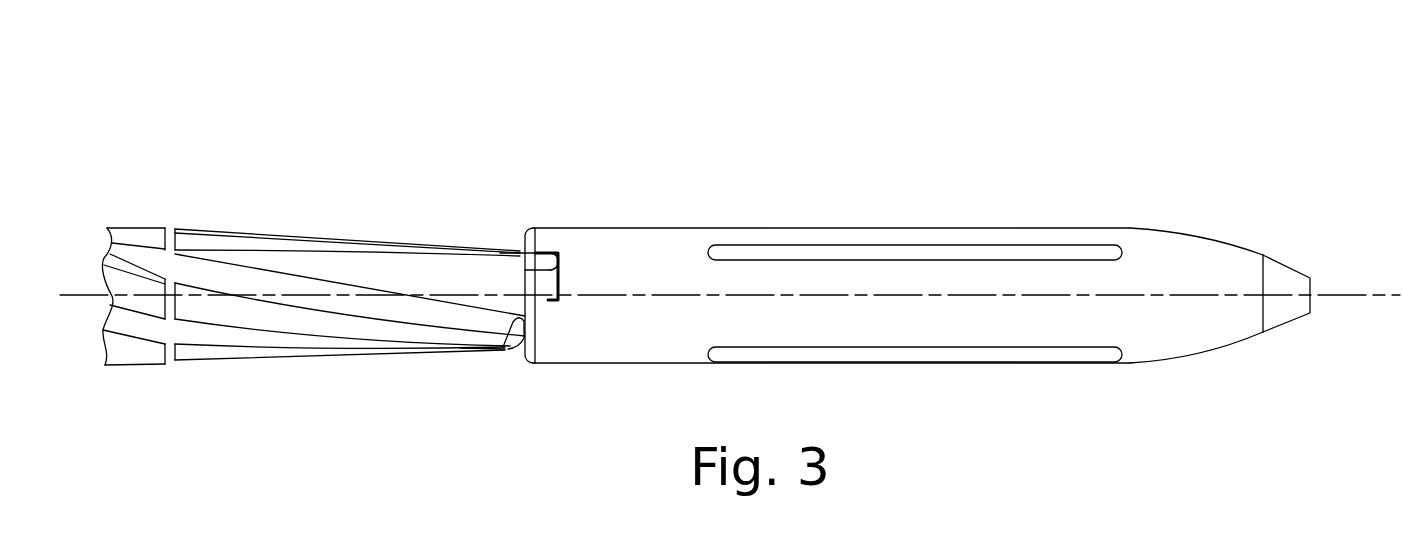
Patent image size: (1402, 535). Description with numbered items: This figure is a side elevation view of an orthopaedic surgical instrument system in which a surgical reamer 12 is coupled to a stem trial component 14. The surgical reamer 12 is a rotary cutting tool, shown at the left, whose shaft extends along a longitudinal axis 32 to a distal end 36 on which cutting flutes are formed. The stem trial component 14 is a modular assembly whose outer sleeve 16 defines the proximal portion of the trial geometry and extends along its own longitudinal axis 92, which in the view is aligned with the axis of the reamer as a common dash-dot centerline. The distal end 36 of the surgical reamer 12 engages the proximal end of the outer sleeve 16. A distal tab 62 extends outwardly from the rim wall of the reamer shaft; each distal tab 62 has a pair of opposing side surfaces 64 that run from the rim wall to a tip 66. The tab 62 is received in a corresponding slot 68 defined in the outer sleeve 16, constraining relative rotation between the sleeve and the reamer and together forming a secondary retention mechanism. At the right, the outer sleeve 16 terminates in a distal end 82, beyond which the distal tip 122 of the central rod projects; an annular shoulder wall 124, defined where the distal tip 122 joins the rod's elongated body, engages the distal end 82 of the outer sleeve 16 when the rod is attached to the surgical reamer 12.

The surgical reamer 12 is at (368, 247).
The stem trial component 14 is at (1070, 128).
The outer sleeve 16 is at (1141, 358).
The distal end 36 is at (500, 341).
The distal tabs 62 is at (546, 257).
The side surfaces 64 is at (520, 322).
The tip 66 is at (561, 262).
The slots 68 is at (543, 303).
The distal end 82 is at (1232, 246).
The distal tip 122 is at (1278, 319).
The annular shoulder wall 124 is at (1266, 256).
The longitudinal axis 32 is at (730, 327).
The longitudinal axis 92 is at (1358, 298).